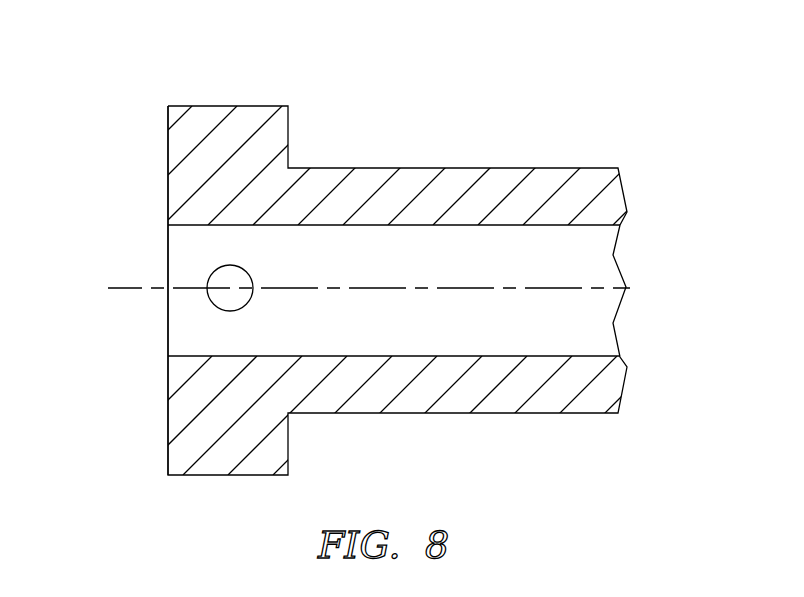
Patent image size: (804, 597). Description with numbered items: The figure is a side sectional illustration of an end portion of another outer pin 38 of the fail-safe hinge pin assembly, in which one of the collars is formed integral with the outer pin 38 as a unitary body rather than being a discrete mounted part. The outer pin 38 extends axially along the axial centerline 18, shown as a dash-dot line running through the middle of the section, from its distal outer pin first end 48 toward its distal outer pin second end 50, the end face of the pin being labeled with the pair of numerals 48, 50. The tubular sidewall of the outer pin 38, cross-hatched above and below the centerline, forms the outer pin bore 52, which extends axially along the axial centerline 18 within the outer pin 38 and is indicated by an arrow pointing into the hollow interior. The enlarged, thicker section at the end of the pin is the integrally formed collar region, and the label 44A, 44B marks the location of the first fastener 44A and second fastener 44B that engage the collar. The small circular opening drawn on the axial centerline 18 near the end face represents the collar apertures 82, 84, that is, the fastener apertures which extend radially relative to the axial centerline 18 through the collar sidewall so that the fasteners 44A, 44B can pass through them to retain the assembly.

The outer pin 38 is at (526, 160).
The first fastener 44A is at (250, 241).
The second fastener 44B is at (269, 94).
The outer pin first end 48 is at (103, 290).
The outer pin second end 50 is at (168, 168).
The outer pin bore 52 is at (575, 330).
The axial centerline 18 is at (122, 287).
The first collar apertures 82 is at (160, 307).
The second collar apertures 84 is at (230, 300).